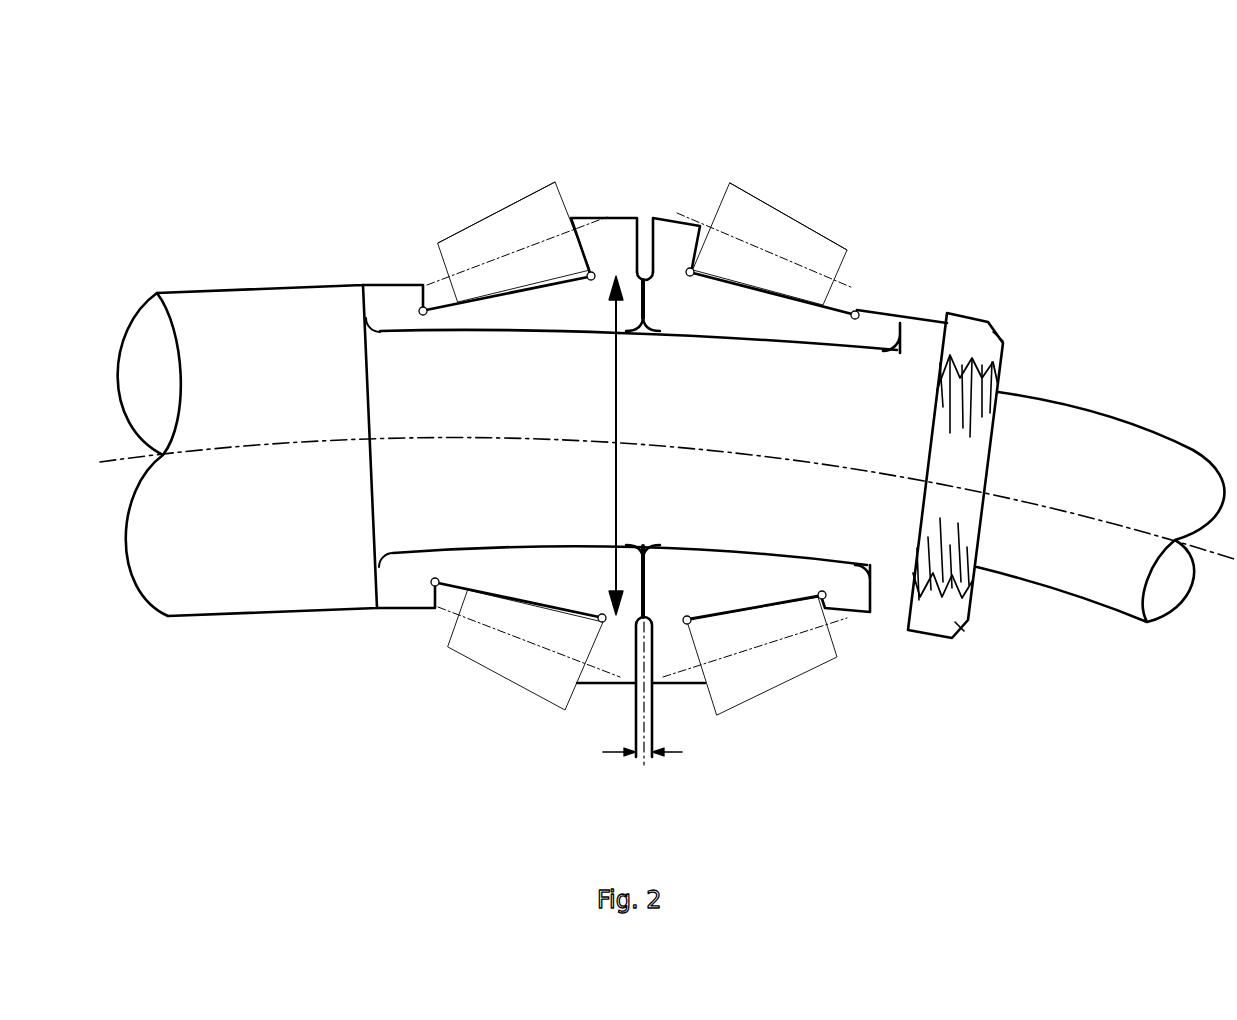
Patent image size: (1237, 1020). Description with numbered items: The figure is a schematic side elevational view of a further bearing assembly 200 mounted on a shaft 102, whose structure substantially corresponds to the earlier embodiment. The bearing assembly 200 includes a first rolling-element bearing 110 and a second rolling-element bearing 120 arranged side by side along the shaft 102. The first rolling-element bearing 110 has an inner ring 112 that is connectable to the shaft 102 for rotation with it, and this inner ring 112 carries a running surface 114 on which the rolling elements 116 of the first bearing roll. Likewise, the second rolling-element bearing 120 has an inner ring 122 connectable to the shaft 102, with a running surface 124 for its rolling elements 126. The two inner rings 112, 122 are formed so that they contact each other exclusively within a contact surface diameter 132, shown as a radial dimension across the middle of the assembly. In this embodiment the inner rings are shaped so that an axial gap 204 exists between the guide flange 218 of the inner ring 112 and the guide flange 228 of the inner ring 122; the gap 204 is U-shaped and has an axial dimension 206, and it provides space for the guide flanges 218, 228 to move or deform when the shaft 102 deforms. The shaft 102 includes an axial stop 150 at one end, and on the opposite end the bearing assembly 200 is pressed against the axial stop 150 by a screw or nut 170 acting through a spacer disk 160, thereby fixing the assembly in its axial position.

The shaft 102 is at (1118, 440).
The first rolling-element bearing 110 is at (460, 232).
The inner ring of the first rolling-element bearing 112 is at (523, 312).
The running surface 114 is at (484, 299).
The rolling elements of the first rolling-element bearing 116 is at (512, 208).
The second rolling-element bearing 120 is at (783, 212).
The inner ring of the second rolling-element bearing 122 is at (777, 322).
The running surface 124 is at (797, 298).
The rolling elements of the second rolling-element bearing 126 is at (807, 245).
The contact surface diameter 132 is at (617, 388).
The axial stop 150 is at (365, 320).
The spacer disk 160 is at (918, 328).
The screw or nut 170 is at (995, 333).
The bearing assembly 200 is at (577, 100).
The axial gap 204 is at (645, 222).
The axial dimension 206 is at (658, 753).
The guide flange of the inner ring of the first rolling-element bearing 218 is at (608, 253).
The guide flange of the inner ring of the second rolling-element bearing 228 is at (689, 250).